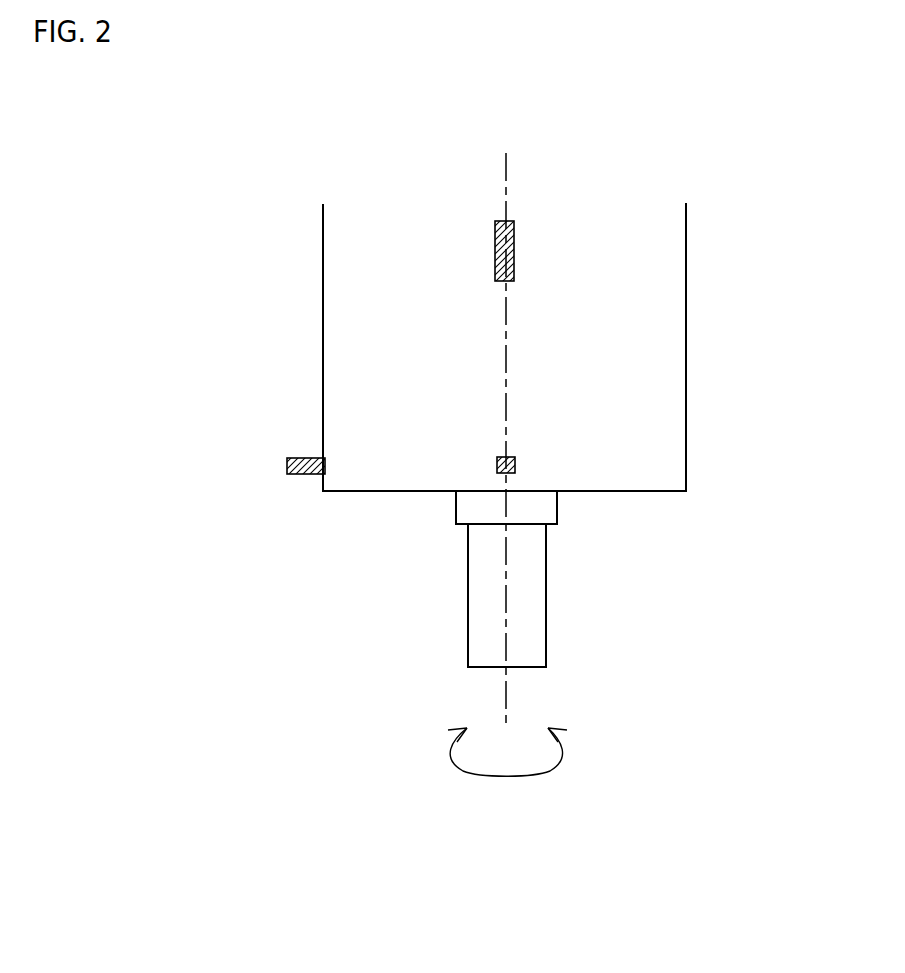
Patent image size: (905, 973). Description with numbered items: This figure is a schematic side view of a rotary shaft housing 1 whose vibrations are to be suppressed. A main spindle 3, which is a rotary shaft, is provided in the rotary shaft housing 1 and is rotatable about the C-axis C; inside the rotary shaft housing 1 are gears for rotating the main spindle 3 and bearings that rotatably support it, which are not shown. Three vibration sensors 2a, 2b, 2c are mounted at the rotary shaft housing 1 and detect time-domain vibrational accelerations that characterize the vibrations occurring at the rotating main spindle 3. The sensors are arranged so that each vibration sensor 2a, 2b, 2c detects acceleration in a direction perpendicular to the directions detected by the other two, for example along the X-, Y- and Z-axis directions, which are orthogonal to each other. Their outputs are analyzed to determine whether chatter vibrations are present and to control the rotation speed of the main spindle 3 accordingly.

The rotary shaft housing 1 is at (337, 314).
The vibration sensor 2a is at (287, 462).
The vibration sensor 2b is at (515, 463).
The vibration sensor 2c is at (514, 248).
The main spindle 3 is at (481, 596).
The C-axis C is at (507, 774).